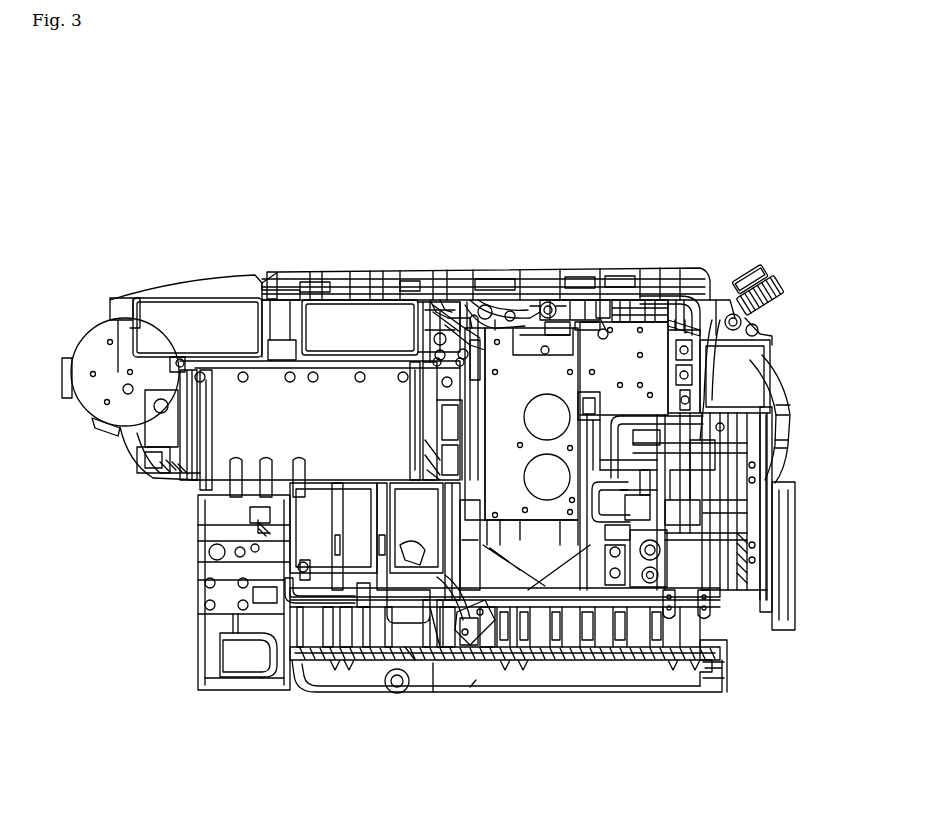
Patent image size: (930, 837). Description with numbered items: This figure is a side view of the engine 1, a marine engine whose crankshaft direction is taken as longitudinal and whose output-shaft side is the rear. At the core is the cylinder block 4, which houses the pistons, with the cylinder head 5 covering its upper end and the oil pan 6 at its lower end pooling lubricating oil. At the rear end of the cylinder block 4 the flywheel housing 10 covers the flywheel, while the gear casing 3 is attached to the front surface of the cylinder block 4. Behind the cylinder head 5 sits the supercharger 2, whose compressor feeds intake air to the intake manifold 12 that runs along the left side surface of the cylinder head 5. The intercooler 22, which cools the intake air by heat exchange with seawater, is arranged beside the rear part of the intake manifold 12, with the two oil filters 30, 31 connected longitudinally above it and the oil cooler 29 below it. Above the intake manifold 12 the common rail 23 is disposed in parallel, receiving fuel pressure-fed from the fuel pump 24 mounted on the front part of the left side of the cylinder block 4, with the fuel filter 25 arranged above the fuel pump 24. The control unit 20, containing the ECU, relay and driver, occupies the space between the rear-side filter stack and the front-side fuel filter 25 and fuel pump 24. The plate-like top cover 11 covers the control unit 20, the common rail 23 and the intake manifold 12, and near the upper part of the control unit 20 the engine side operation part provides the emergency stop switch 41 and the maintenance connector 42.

The engine 1 is at (535, 113).
The supercharger 2 is at (80, 312).
The gear casing 3 is at (740, 597).
The cylinder block 4 is at (612, 660).
The cylinder head 5 is at (510, 300).
The oil pan 6 is at (478, 690).
The flywheel housing 10 is at (240, 685).
The top cover 11 is at (580, 298).
The intake manifold 12 is at (440, 300).
The control unit 20 is at (545, 660).
The intercooler 22 is at (320, 437).
The common rail 23 is at (548, 298).
The fuel pump 24 is at (645, 660).
The fuel filter 25 is at (787, 340).
The oil cooler 29 is at (340, 652).
The oil filter 30 is at (193, 318).
The oil filter 31 is at (331, 310).
The emergency stop switch 41 is at (641, 296).
The maintenance connector 42 is at (598, 296).